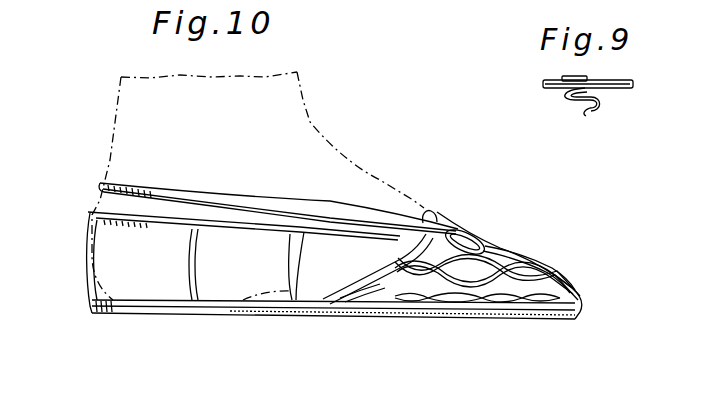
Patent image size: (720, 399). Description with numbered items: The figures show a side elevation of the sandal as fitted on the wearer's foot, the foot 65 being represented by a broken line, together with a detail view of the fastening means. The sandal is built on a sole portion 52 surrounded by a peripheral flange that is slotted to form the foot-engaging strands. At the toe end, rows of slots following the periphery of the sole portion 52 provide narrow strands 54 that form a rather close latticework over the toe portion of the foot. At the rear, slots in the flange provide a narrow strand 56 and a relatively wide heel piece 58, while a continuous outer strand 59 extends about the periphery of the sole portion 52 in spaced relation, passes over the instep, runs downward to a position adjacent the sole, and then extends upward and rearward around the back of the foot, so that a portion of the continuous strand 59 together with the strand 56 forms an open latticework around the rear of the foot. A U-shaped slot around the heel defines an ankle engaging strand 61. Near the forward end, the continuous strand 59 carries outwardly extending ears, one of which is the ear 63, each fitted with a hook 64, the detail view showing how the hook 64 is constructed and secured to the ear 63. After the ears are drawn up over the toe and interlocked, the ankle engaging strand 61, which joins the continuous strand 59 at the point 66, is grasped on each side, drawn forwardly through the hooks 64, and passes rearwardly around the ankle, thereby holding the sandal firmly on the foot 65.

In FIG. 10, the sole portion 52 is at (271, 317).
In FIG. 10, the narrow strands 54 is at (457, 292).
In FIG. 10, the narrow strand 56 is at (188, 265).
In FIG. 10, the heel piece 58 is at (84, 277).
In FIG. 10, the continuous outer strand 59 is at (290, 267).
In FIG. 10, the ankle engaging strand 61 is at (99, 182).
In FIG. 9, the ear 63 is at (620, 82).
In FIG. 10, the hook 64 is at (453, 240).
In FIG. 9, the hook 64 is at (580, 112).
In FIG. 10, the foot 65 is at (310, 124).
In FIG. 10, the point 66 is at (314, 236).